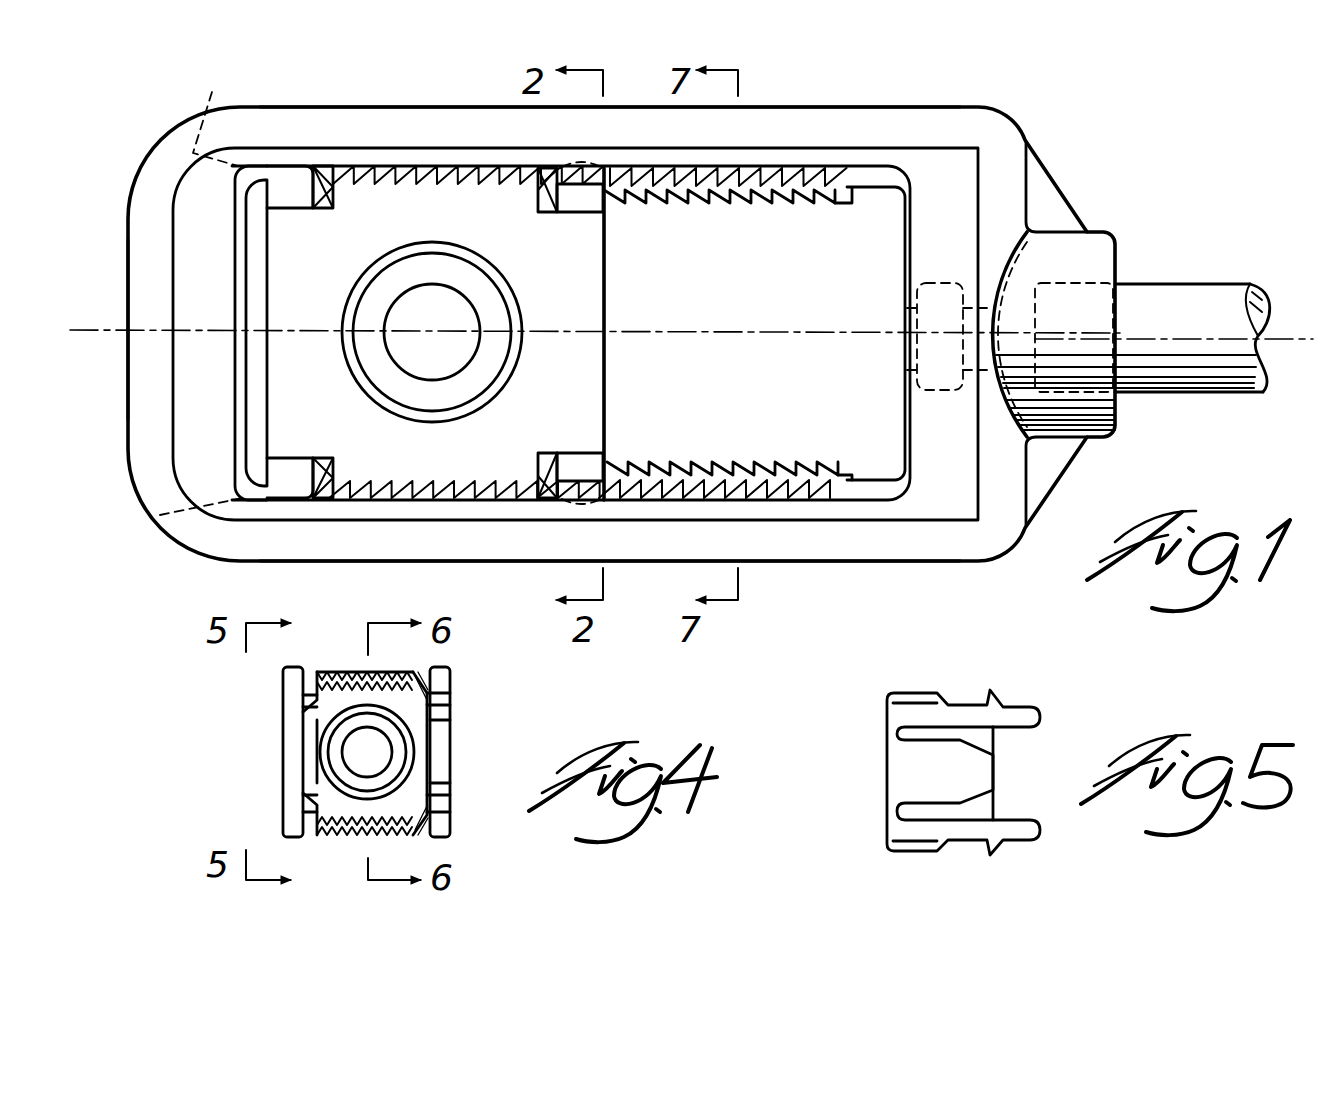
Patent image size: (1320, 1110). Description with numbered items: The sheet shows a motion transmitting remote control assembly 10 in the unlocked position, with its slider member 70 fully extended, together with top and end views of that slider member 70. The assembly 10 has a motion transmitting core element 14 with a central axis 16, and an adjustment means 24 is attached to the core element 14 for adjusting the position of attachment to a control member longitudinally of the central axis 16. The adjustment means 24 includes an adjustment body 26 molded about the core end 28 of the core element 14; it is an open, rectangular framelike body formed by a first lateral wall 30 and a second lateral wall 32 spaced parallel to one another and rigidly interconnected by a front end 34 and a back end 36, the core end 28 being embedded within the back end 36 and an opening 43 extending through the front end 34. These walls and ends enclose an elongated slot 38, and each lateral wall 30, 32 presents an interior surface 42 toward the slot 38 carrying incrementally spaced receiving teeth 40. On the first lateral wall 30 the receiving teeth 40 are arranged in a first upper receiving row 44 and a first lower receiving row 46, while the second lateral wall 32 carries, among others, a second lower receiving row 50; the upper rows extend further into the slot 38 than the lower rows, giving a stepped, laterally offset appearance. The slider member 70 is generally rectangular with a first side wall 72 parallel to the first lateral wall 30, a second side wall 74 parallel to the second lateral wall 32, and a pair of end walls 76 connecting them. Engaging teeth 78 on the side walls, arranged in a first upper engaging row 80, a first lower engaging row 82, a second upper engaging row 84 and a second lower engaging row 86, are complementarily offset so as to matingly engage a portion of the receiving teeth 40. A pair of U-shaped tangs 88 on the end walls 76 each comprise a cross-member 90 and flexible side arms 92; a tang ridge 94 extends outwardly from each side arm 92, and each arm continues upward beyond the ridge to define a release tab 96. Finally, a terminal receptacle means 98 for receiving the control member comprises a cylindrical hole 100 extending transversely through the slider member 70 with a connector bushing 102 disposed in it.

In FIG. 1, the motion transmitting remote control assembly 10 is at (1062, 133).
In FIG. 1, the motion transmitting core element 14 is at (1183, 290).
In FIG. 1, the central axis 16 is at (1285, 339).
In FIG. 1, the adjustment means 24 is at (150, 152).
In FIG. 1, the adjustment body 26 is at (178, 530).
In FIG. 1, the core end 28 is at (916, 377).
In FIG. 1, the first lateral wall 30 is at (885, 561).
In FIG. 1, the second lateral wall 32 is at (342, 107).
In FIG. 1, the front end 34 is at (126, 398).
In FIG. 1, the back end 36 is at (1030, 195).
In FIG. 1, the elongated slot 38 is at (905, 240).
In FIG. 1, the receiving teeth 40 is at (745, 206).
In FIG. 1, the interior surface 42 is at (238, 180).
In FIG. 1, the opening 43 is at (215, 113).
In FIG. 1, the first upper receiving row 44 is at (842, 464).
In FIG. 1, the first lower receiving row 46 is at (405, 500).
In FIG. 1, the second lower receiving row 50 is at (752, 168).
In FIG. 1, the slider member 70 is at (608, 292).
In FIG. 4, the slider member 70 is at (455, 742).
In FIG. 5, the slider member 70 is at (1036, 712).
In FIG. 4, the first side wall 72 is at (305, 695).
In FIG. 4, the second side wall 74 is at (305, 812).
In FIG. 4, the end walls 76 is at (286, 773).
In FIG. 5, the end walls 76 is at (887, 714).
In FIG. 4, the engaging teeth 78 is at (345, 645).
In FIG. 4, the first upper engaging row 80 is at (432, 700).
In FIG. 5, the first upper engaging row 80 is at (968, 705).
In FIG. 1, the first lower engaging row 82 is at (385, 478).
In FIG. 4, the first lower engaging row 82 is at (415, 684).
In FIG. 5, the first lower engaging row 82 is at (893, 695).
In FIG. 4, the second upper engaging row 84 is at (428, 810).
In FIG. 5, the second upper engaging row 84 is at (968, 840).
In FIG. 4, the second lower engaging row 86 is at (412, 820).
In FIG. 5, the second lower engaging row 86 is at (893, 850).
In FIG. 5, the tangs 88 is at (887, 828).
In FIG. 5, the cross-member 90 is at (887, 760).
In FIG. 5, the flexible side arms 92 is at (930, 830).
In FIG. 1, the tang ridge 94 is at (283, 205).
In FIG. 4, the tang ridge 94 is at (448, 828).
In FIG. 5, the tang ridge 94 is at (990, 856).
In FIG. 4, the release tab 96 is at (452, 810).
In FIG. 5, the release tab 96 is at (1030, 838).
In FIG. 1, the terminal receptacle means 98 is at (502, 268).
In FIG. 4, the terminal receptacle means 98 is at (312, 757).
In FIG. 1, the cylindrical hole 100 is at (510, 362).
In FIG. 4, the cylindrical hole 100 is at (330, 746).
In FIG. 1, the connector bushing 102 is at (387, 345).
In FIG. 4, the connector bushing 102 is at (392, 752).